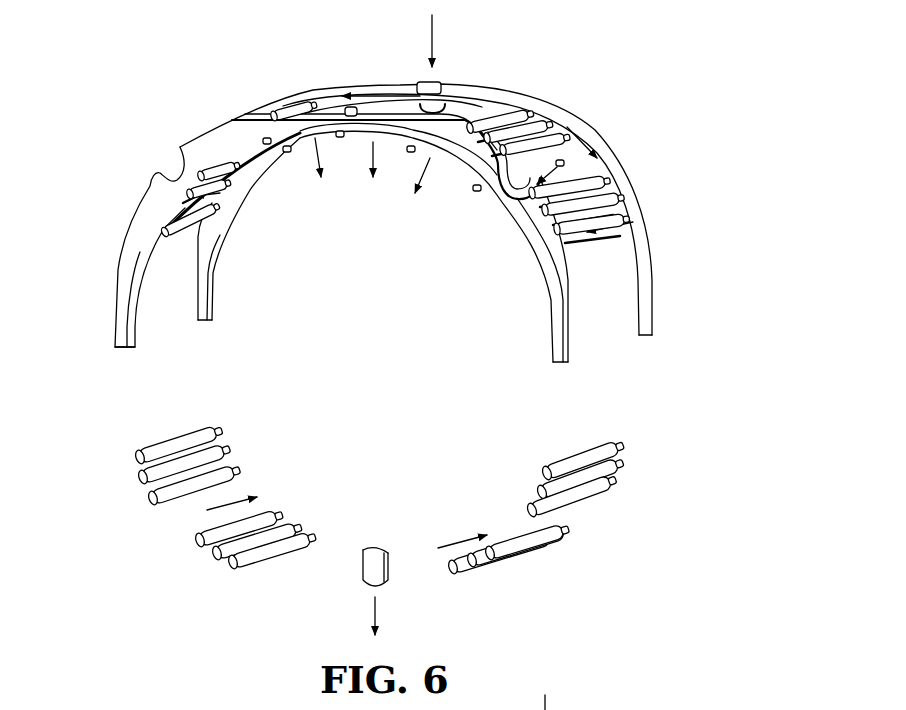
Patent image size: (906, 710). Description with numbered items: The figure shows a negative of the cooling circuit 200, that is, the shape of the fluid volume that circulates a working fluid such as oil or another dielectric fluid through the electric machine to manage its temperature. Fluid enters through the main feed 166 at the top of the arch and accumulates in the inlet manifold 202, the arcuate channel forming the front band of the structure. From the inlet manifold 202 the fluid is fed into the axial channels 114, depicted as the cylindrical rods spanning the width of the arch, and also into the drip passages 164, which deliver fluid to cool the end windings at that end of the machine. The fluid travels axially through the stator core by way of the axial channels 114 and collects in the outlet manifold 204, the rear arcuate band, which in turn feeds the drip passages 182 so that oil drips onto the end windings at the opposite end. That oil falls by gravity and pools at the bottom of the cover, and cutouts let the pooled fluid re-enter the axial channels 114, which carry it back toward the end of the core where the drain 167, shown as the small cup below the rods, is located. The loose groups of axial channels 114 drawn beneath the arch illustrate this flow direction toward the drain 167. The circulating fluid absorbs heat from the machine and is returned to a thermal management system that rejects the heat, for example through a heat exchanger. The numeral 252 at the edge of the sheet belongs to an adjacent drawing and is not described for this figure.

The cooling circuit 200 is at (601, 50).
The inlet manifold 202 is at (587, 127).
The outlet manifold 204 is at (147, 218).
The axial channels 114 is at (290, 108).
The drip passages 164 is at (450, 104).
The main feed 166 is at (412, 80).
The drain 167 is at (388, 573).
The drip passages 182 is at (268, 148).
The component 252 is at (592, 698).